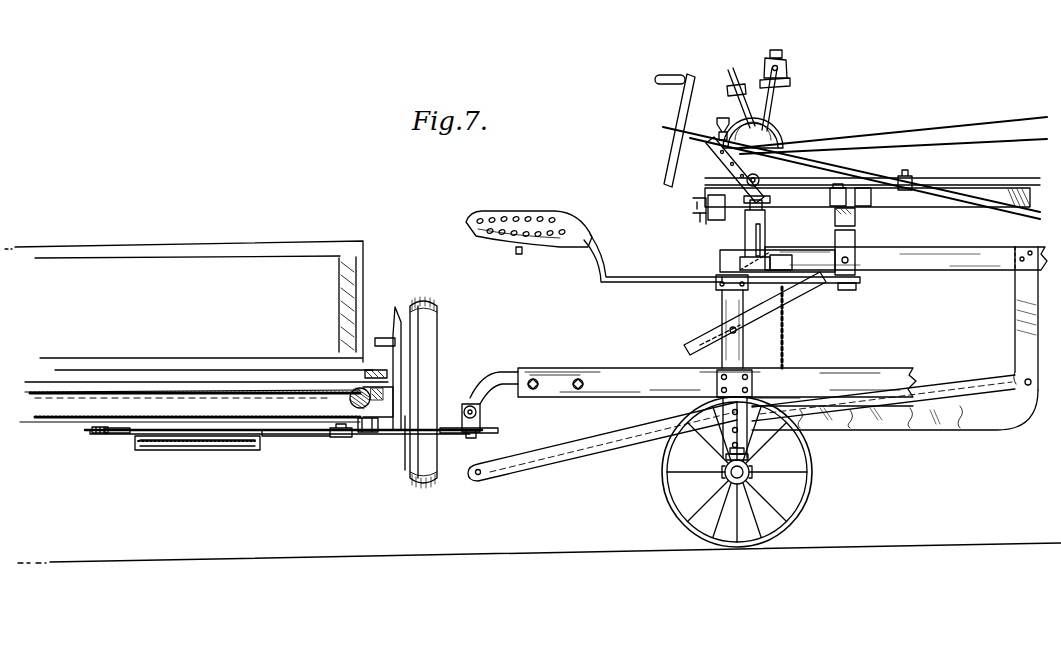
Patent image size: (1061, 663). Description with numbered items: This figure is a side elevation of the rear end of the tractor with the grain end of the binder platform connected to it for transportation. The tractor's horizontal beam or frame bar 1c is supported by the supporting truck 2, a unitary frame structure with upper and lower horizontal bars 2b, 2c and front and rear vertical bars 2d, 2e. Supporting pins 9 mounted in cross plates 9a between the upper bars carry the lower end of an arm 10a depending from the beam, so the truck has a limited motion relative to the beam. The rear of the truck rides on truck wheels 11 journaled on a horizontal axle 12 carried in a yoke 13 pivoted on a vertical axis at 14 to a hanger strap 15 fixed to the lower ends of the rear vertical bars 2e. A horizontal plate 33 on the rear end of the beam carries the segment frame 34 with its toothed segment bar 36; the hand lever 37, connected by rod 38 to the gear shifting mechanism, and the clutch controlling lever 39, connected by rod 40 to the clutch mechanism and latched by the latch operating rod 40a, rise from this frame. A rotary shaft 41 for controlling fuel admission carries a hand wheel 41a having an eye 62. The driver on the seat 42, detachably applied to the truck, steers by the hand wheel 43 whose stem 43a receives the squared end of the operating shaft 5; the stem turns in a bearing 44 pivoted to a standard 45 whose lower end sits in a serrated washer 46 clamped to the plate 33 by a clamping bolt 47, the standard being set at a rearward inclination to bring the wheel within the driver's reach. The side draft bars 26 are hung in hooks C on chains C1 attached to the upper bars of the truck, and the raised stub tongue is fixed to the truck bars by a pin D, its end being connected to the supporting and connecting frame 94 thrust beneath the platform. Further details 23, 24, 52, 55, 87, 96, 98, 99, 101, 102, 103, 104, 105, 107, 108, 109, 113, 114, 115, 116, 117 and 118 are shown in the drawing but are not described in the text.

The horizontal beam or frame bar 1c is at (866, 190).
The supporting truck 2 is at (1013, 297).
The upper horizontal bars 2b is at (946, 262).
The lower horizontal bars 2c is at (990, 422).
The front vertical bars 2d is at (1030, 320).
The rear vertical bars 2e is at (728, 320).
The squared rotary operating shaft 5 is at (978, 206).
The supporting pins 9 is at (793, 260).
The cross plates 9a is at (750, 274).
The arm 10a is at (766, 240).
The truck wheels 11 is at (813, 470).
The horizontal axle 12 is at (728, 485).
The yoke or frame 13 is at (723, 472).
The vertical pivot 14 is at (750, 457).
The hanger strap 15 is at (745, 450).
The frame side bar 23 is at (878, 378).
The bolt hole 24 is at (1030, 386).
The side draft bars 26 is at (965, 380).
The horizontal plate 33 is at (770, 198).
The segment frame 34 is at (795, 163).
The toothed segment bar 36 is at (746, 128).
The hand lever 37 is at (736, 70).
The rod 38 is at (976, 138).
The clutch controlling lever 39 is at (777, 114).
The rod 40 is at (927, 128).
The latch operating rod 40a is at (788, 65).
The rotary shaft 41 is at (716, 224).
The hand wheel 41a is at (694, 202).
The seat 42 is at (547, 238).
The hand wheel 43 is at (683, 112).
The stem 43a is at (834, 165).
The bearing 44 is at (719, 120).
The standard 45 is at (715, 158).
The washer 46 is at (763, 184).
The clamping bolt 47 is at (748, 212).
The bracket 52 is at (733, 86).
The bracket 55 is at (791, 83).
The eye 62 is at (696, 213).
The bracket 87 is at (906, 175).
The supporting and connecting frame 94 is at (364, 440).
The rod 96 is at (287, 438).
The carriage 98 is at (136, 440).
The collar 99 is at (112, 437).
The spring 101 is at (92, 433).
The clip 102 is at (340, 437).
The bracket 103 is at (382, 445).
The plate bracket 104 is at (396, 432).
The pulley 105 is at (426, 452).
The pivot bracket 107 is at (467, 402).
The rod 108 is at (480, 416).
The curved bar end 109 is at (503, 373).
The seat support bar 113 is at (659, 284).
The plate 114 is at (716, 283).
The bolt 115 is at (850, 262).
The bracket 116 is at (857, 286).
The bracket 117 is at (858, 240).
The bracket top 118 is at (858, 218).
The hooks C is at (793, 404).
The chains C1 is at (786, 346).
The pin D is at (746, 380).